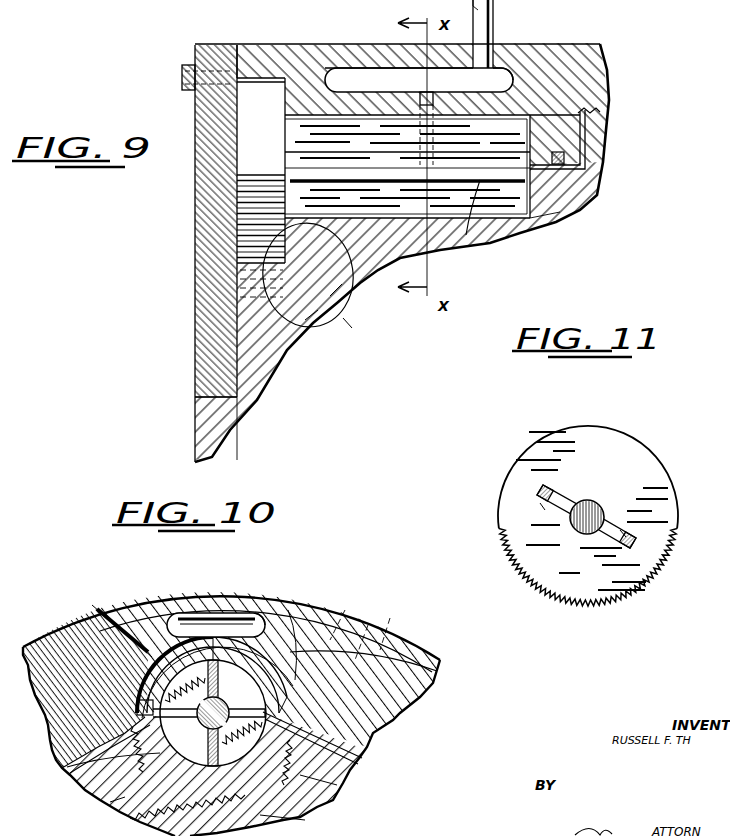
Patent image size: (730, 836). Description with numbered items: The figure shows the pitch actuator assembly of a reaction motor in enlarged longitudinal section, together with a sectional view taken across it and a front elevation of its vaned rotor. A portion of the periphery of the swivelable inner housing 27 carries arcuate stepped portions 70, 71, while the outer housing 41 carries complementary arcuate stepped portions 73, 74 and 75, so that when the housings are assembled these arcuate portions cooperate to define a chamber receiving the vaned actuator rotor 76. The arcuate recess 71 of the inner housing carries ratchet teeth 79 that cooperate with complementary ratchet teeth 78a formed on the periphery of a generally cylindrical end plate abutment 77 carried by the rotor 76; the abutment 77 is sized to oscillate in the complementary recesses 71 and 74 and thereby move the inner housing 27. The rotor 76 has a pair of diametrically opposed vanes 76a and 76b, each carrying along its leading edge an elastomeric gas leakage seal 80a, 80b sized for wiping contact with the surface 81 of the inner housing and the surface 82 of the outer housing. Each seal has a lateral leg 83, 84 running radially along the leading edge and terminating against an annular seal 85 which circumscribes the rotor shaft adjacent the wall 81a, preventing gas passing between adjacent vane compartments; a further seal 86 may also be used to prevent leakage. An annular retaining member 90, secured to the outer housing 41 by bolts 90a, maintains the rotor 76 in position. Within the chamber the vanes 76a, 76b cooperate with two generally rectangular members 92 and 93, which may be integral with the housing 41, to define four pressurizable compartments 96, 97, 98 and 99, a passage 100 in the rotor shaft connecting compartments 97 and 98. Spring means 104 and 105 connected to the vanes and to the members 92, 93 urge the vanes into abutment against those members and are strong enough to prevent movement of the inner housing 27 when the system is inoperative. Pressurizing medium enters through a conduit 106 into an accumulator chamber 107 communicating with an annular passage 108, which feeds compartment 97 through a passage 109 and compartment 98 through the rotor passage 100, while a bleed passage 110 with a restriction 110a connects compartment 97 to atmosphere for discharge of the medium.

In FIG. 9, the inner housing 27 is at (580, 212).
In FIG. 10, the inner housing 27 is at (325, 795).
In FIG. 10, the outer housing 41 is at (65, 630).
In FIG. 9, the arcuate stepped portion 70 is at (226, 394).
In FIG. 9, the arcuate recess 71 is at (318, 318).
In FIG. 9, the arcuate stepped portion 73 is at (227, 63).
In FIG. 10, the arcuate stepped portion 73 is at (390, 618).
In FIG. 9, the arcuate portion 74 is at (258, 78).
In FIG. 10, the arcuate portion 74 is at (345, 610).
In FIG. 9, the arcuate stepped portion 75 is at (300, 113).
In FIG. 9, the vaned actuator rotor 76 is at (362, 275).
In FIG. 10, the vaned actuator rotor 76 is at (228, 702).
In FIG. 11, the vaned actuator rotor 76 is at (595, 497).
In FIG. 9, the vane 76a is at (598, 60).
In FIG. 10, the vane 76a is at (288, 610).
In FIG. 11, the vane 76a is at (540, 503).
In FIG. 9, the vane 76b is at (463, 262).
In FIG. 10, the vane 76b is at (337, 785).
In FIG. 11, the vane 76b is at (620, 530).
In FIG. 9, the end plate abutment 77 is at (253, 117).
In FIG. 11, the end plate abutment 77 is at (650, 470).
In FIG. 9, the ratchet teeth 78a is at (248, 238).
In FIG. 10, the ratchet teeth 78a is at (110, 802).
In FIG. 11, the ratchet teeth 78a is at (588, 607).
In FIG. 9, the ratchet teeth 79 is at (348, 326).
In FIG. 10, the ratchet teeth 79 is at (307, 820).
In FIG. 9, the gas leakage seal 80a is at (370, 113).
In FIG. 11, the gas leakage seal 80a is at (542, 487).
In FIG. 9, the gas leakage seal 80b is at (388, 204).
In FIG. 10, the gas leakage seal 80b is at (222, 614).
In FIG. 11, the gas leakage seal 80b is at (640, 548).
In FIG. 9, the surface 81 is at (340, 296).
In FIG. 9, the wall 81a is at (533, 130).
In FIG. 9, the surface 82 is at (342, 115).
In FIG. 9, the lateral leg 83 is at (597, 110).
In FIG. 9, the lateral leg 84 is at (580, 190).
In FIG. 9, the annular seal 85 is at (560, 148).
In FIG. 9, the seal 86 is at (566, 160).
In FIG. 9, the annular retaining member 90 is at (213, 300).
In FIG. 9, the bolts 90a is at (196, 47).
In FIG. 10, the rectangular member 92 is at (368, 625).
In FIG. 10, the rectangular member 93 is at (176, 722).
In FIG. 10, the vane pressurizable compartment 96 is at (284, 645).
In FIG. 10, the vane compartment 97 is at (186, 655).
In FIG. 10, the vane compartment 98 is at (346, 768).
In FIG. 10, the vane pressurizable compartment 99 is at (85, 783).
In FIG. 10, the passage 100 is at (318, 622).
In FIG. 10, the spring means 104 is at (151, 615).
In FIG. 10, the spring means 105 is at (372, 743).
In FIG. 9, the conduit 106 is at (492, 30).
In FIG. 9, the accumulator chamber 107 is at (502, 70).
In FIG. 10, the accumulator chamber 107 is at (255, 610).
In FIG. 9, the annular passage 108 is at (499, 63).
In FIG. 10, the annular passage 108 is at (200, 615).
In FIG. 10, the passage 109 is at (62, 757).
In FIG. 10, the bleed passage 110 is at (128, 613).
In FIG. 10, the restriction 110a is at (97, 612).